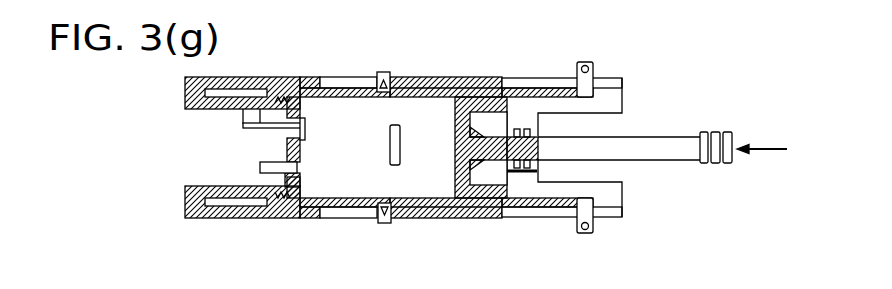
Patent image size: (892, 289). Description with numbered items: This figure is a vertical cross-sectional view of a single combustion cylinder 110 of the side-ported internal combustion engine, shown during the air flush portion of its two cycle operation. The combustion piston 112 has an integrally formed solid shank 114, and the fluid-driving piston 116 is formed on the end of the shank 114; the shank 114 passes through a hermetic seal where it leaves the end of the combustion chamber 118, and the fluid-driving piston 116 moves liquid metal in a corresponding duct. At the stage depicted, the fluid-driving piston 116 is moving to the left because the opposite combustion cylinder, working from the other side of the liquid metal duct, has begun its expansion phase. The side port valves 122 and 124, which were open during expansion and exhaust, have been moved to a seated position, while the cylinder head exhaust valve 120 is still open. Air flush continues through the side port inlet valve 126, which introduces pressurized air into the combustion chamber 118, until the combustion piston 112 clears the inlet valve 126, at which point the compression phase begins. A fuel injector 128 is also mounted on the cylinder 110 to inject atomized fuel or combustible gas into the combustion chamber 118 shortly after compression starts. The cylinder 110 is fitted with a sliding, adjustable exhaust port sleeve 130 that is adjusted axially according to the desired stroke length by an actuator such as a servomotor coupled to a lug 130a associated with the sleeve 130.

The combustion cylinder 110 is at (641, 72).
The combustion piston 112 is at (505, 217).
The solid shank 114 is at (647, 160).
The fluid-driving piston 116 is at (733, 132).
The combustion chamber 118 is at (331, 112).
The cylinder head exhaust valve 120 is at (243, 129).
The side port valve 122 is at (383, 72).
The side port valve 124 is at (385, 222).
The side port inlet valve 126 is at (395, 165).
The fuel injector 128 is at (262, 168).
The exhaust port sleeve 130 is at (534, 85).
The lug 130a is at (586, 63).